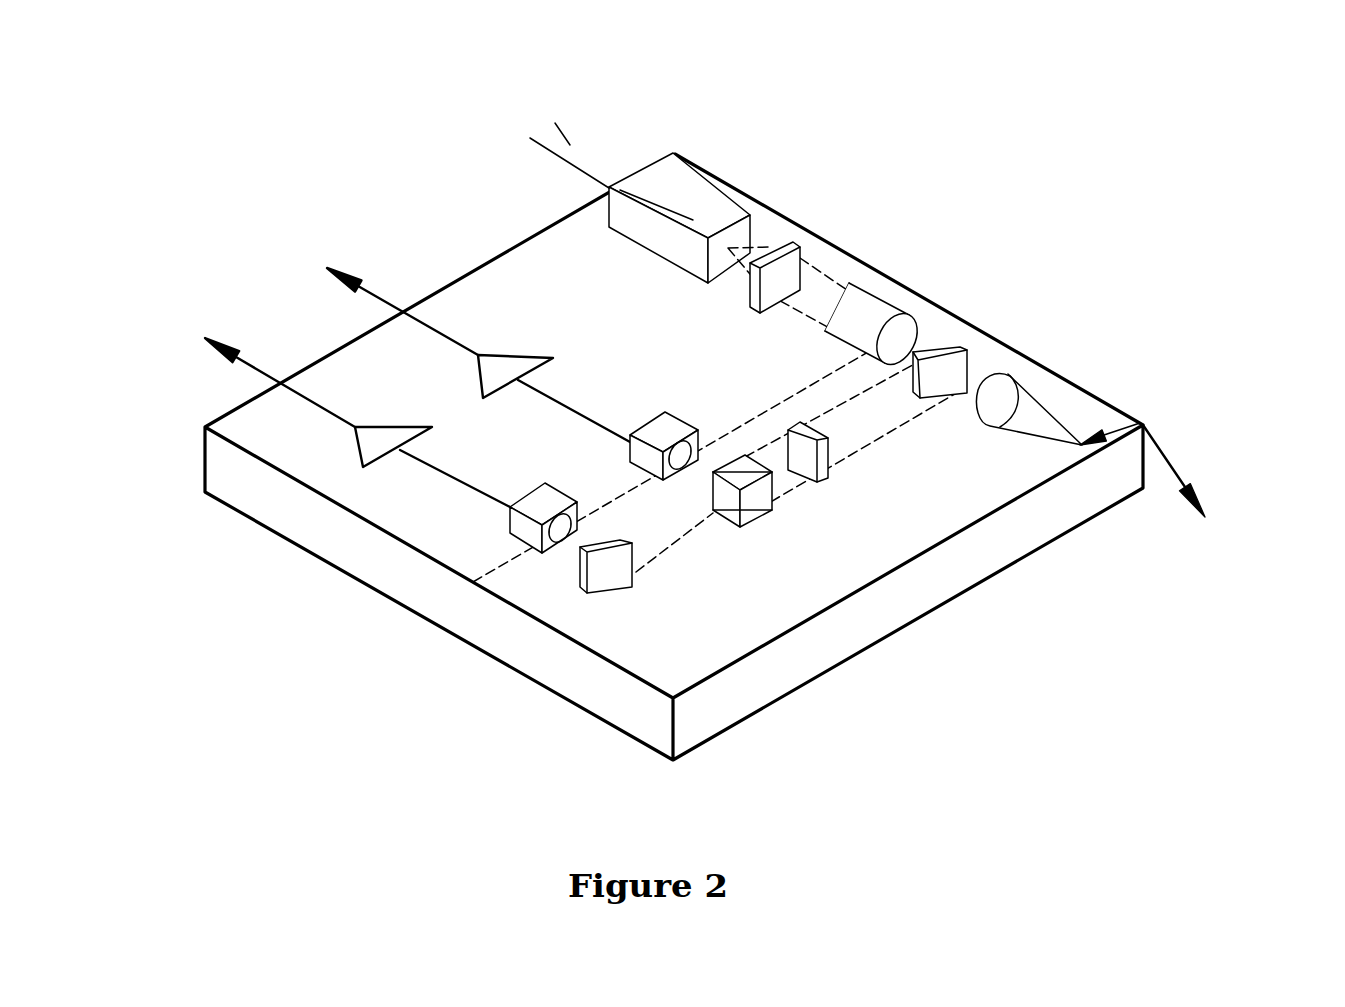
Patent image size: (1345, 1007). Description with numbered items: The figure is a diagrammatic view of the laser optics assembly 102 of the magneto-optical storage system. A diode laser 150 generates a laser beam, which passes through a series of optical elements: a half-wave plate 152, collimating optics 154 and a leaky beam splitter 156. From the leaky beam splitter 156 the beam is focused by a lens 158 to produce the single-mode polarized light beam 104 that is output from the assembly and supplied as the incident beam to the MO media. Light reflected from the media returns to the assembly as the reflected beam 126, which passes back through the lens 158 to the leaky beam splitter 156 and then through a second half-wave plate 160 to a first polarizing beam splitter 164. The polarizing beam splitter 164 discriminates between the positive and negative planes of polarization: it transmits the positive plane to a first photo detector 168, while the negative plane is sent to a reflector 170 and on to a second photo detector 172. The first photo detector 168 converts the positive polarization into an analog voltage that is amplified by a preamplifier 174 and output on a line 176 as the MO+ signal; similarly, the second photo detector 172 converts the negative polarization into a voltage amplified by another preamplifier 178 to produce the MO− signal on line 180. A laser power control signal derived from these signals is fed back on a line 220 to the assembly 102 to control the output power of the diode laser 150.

The laser optics assembly 102 is at (319, 89).
The single-mode polarized light beam 104 is at (1200, 505).
The reflected beam 126 is at (1140, 423).
The diode laser 150 is at (720, 193).
The half-wave plate 152 is at (800, 253).
The collimating optics 154 is at (880, 305).
The leaky beam splitter 156 is at (957, 348).
The lens 158 is at (1045, 393).
The half-wave plate 160 is at (817, 482).
The first polarizing beam splitter 164 is at (750, 520).
The first photo detector 168 is at (630, 434).
The reflector 170 is at (615, 572).
The second photo detector 172 is at (523, 527).
The preamplifier 174 is at (495, 362).
The line 176 is at (360, 292).
The preamplifier 178 is at (370, 437).
The line 180 is at (243, 365).
The line 220 is at (588, 158).